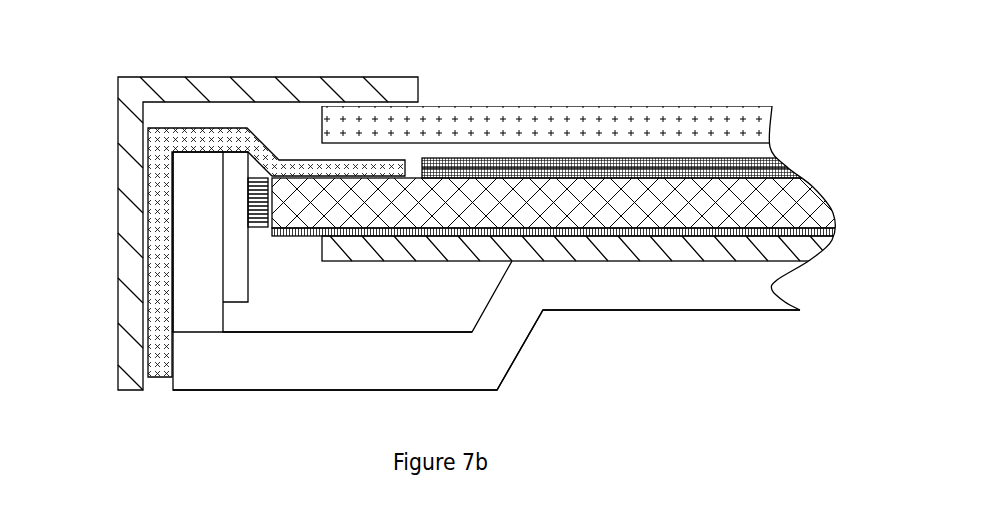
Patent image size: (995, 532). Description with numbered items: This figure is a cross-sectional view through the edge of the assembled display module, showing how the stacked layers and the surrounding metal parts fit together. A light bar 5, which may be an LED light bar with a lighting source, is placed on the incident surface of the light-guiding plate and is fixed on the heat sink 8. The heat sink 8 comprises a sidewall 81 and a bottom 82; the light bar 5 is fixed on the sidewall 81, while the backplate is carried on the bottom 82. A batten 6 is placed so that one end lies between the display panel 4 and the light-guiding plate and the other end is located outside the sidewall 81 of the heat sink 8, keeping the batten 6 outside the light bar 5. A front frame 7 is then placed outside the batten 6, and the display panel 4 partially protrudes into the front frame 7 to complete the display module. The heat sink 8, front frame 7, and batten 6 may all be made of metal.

The display panel 4 is at (545, 120).
The light bar 5 is at (255, 228).
The batten 6 is at (148, 175).
The front frame 7 is at (133, 90).
The heat sink 8 is at (205, 228).
The sidewall 81 is at (217, 260).
The bottom 82 is at (492, 332).